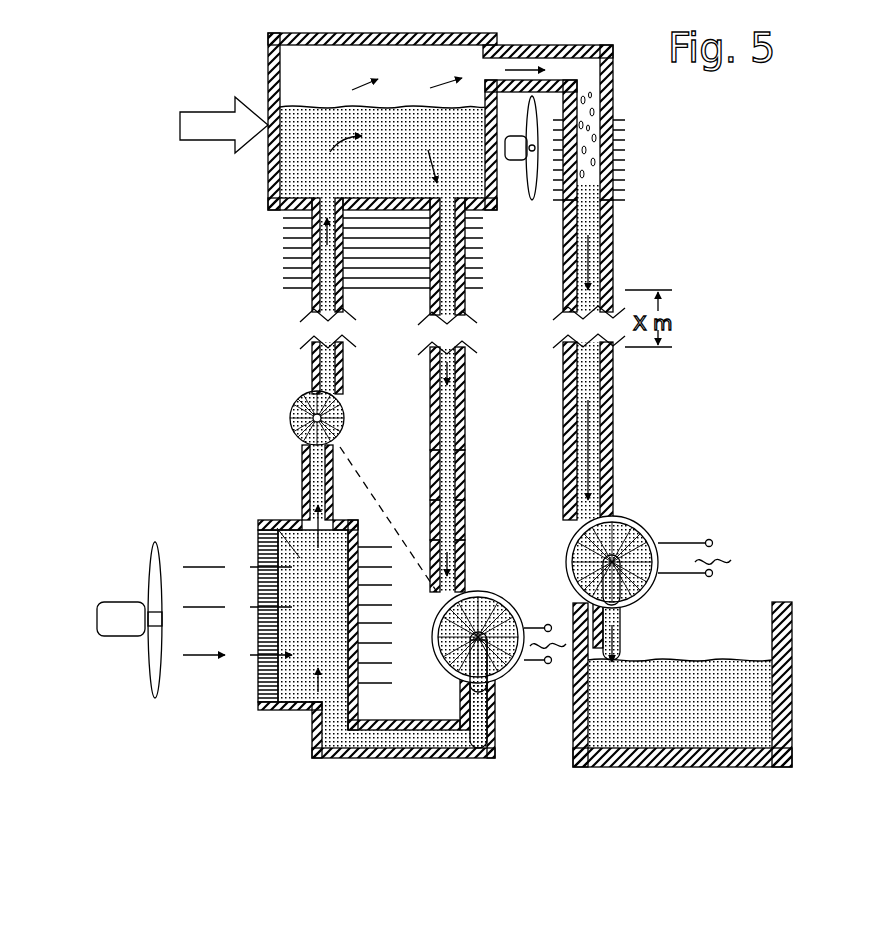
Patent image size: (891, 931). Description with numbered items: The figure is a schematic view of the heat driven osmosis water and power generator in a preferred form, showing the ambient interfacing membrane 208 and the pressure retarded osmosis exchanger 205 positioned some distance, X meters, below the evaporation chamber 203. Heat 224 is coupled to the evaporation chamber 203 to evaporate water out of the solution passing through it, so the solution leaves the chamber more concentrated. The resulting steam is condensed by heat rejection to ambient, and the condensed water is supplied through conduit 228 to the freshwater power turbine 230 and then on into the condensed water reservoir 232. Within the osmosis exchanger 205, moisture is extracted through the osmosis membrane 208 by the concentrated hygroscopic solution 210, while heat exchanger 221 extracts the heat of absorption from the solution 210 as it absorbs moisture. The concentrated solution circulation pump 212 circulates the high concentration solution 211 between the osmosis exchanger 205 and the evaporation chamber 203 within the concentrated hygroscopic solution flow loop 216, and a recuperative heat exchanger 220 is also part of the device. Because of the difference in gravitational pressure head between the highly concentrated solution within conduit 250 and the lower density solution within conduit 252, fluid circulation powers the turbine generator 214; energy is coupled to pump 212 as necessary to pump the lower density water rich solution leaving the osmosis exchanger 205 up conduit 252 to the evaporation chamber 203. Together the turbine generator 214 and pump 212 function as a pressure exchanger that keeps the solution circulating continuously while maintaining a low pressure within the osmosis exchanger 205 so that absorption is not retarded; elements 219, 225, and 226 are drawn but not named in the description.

The evaporation chamber 203 is at (268, 83).
The heat 224 is at (153, 126).
The recuperative heat exchanger 220 is at (283, 266).
The conduit 252 is at (312, 310).
The concentrated hygroscopic solution flow loop 216 is at (468, 313).
The conduit 250 is at (465, 380).
The brine return line 219 is at (463, 473).
The high concentration solution 211 is at (450, 518).
The heat exchanger 221 is at (455, 560).
The concentrated solution circulation pump 212 is at (292, 412).
The concentrated hygroscopic solution 210 is at (262, 522).
The pressure retarded osmosis exchanger 205 is at (297, 708).
The solution pressure differential turbine generator 214 is at (480, 592).
The osmosis membrane 208 is at (257, 678).
The condenser fins 225 is at (613, 147).
The condensate column 226 is at (597, 275).
The conduit 228 is at (610, 425).
The freshwater power turbine 230 is at (643, 530).
The condensed water reservoir 232 is at (790, 662).